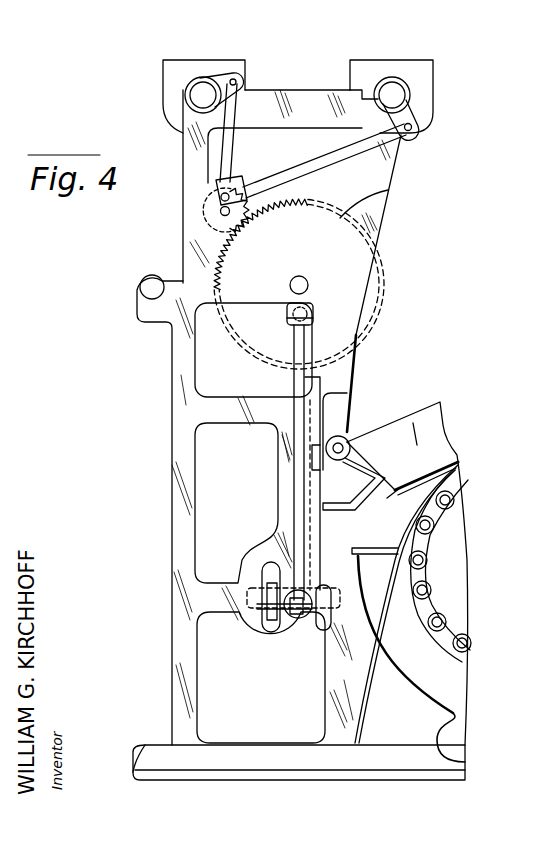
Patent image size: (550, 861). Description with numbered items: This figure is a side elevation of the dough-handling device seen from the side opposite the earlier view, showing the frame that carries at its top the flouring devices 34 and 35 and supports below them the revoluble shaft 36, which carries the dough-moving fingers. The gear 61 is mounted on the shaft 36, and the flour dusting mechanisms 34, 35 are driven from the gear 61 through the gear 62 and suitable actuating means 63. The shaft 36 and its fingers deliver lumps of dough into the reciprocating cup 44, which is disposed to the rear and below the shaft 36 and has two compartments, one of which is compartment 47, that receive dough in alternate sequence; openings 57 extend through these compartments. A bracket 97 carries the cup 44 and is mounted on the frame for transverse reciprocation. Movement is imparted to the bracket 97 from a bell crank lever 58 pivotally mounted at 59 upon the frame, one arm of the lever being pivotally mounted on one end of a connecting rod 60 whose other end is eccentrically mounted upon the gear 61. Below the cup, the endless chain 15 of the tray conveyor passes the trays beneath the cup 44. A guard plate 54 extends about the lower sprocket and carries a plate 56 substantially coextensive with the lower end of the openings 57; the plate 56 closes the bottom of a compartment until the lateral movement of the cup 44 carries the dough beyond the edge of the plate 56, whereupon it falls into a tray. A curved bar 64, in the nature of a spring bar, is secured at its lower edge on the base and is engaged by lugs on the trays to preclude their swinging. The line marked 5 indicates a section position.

The flouring device 34 is at (168, 92).
The flouring device 35 is at (423, 89).
The actuating means 63 is at (250, 178).
The gear 62 is at (207, 210).
The revoluble shaft 36 is at (308, 279).
The gear 61 is at (367, 287).
The connecting rod 60 is at (300, 353).
The section line 5 is at (300, 382).
The bracket 97 is at (350, 473).
The compartment 47 is at (413, 423).
The reciprocating cup 44 is at (440, 432).
The plate 56 is at (458, 462).
The opening 57 is at (396, 494).
The endless chain 15 is at (438, 518).
The bell crank lever 58 is at (410, 543).
The curved bar 64 is at (397, 660).
The guard plate 54 is at (368, 702).
The pivot 59 is at (327, 630).